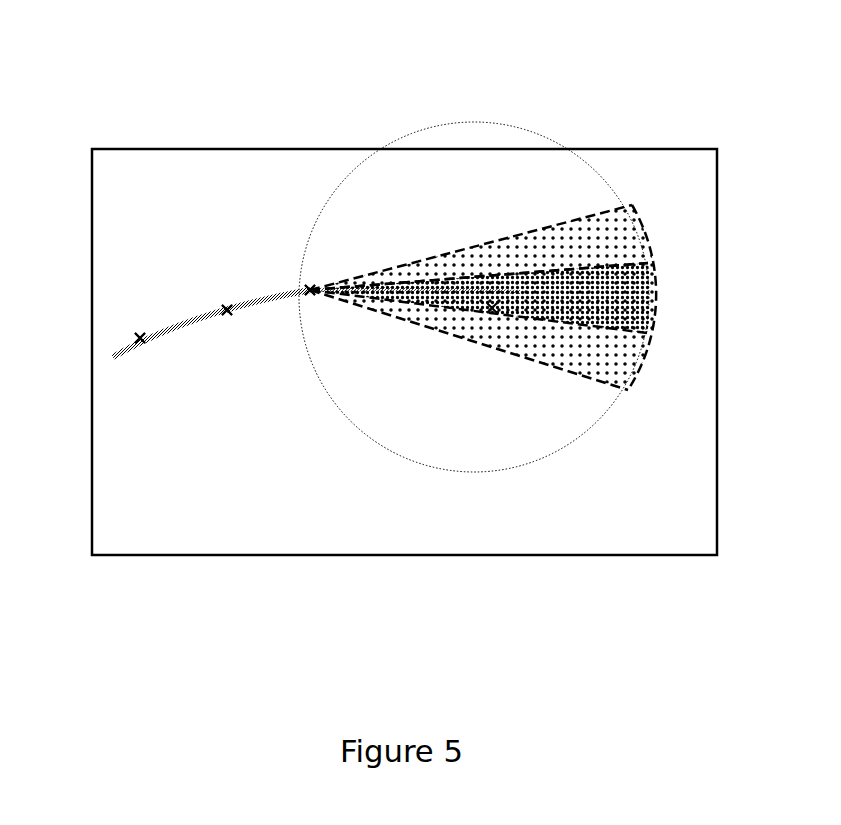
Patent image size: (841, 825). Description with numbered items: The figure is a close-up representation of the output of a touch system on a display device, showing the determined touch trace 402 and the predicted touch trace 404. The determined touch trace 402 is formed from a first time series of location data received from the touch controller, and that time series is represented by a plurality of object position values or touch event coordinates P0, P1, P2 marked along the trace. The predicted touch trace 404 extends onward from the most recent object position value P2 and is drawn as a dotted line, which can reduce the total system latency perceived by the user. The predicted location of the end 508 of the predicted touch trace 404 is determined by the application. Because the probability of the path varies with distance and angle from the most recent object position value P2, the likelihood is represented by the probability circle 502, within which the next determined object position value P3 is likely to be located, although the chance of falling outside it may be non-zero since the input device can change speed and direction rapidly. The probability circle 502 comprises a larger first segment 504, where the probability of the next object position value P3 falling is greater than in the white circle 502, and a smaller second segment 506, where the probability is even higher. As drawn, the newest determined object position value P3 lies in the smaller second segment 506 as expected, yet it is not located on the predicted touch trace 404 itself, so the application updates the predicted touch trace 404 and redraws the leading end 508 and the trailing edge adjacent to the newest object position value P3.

The determined touch trace 402 is at (180, 322).
The predicted touch trace 404 is at (392, 290).
The probability circle 502 is at (350, 172).
The larger first segment 504 is at (628, 237).
The smaller second segment 506 is at (628, 292).
The end of the predicted touch trace 508 is at (520, 290).
The object position value P0 is at (138, 367).
The object position value P1 is at (227, 338).
The most recent object position value P2 is at (308, 300).
The next determined object position value P3 is at (492, 333).